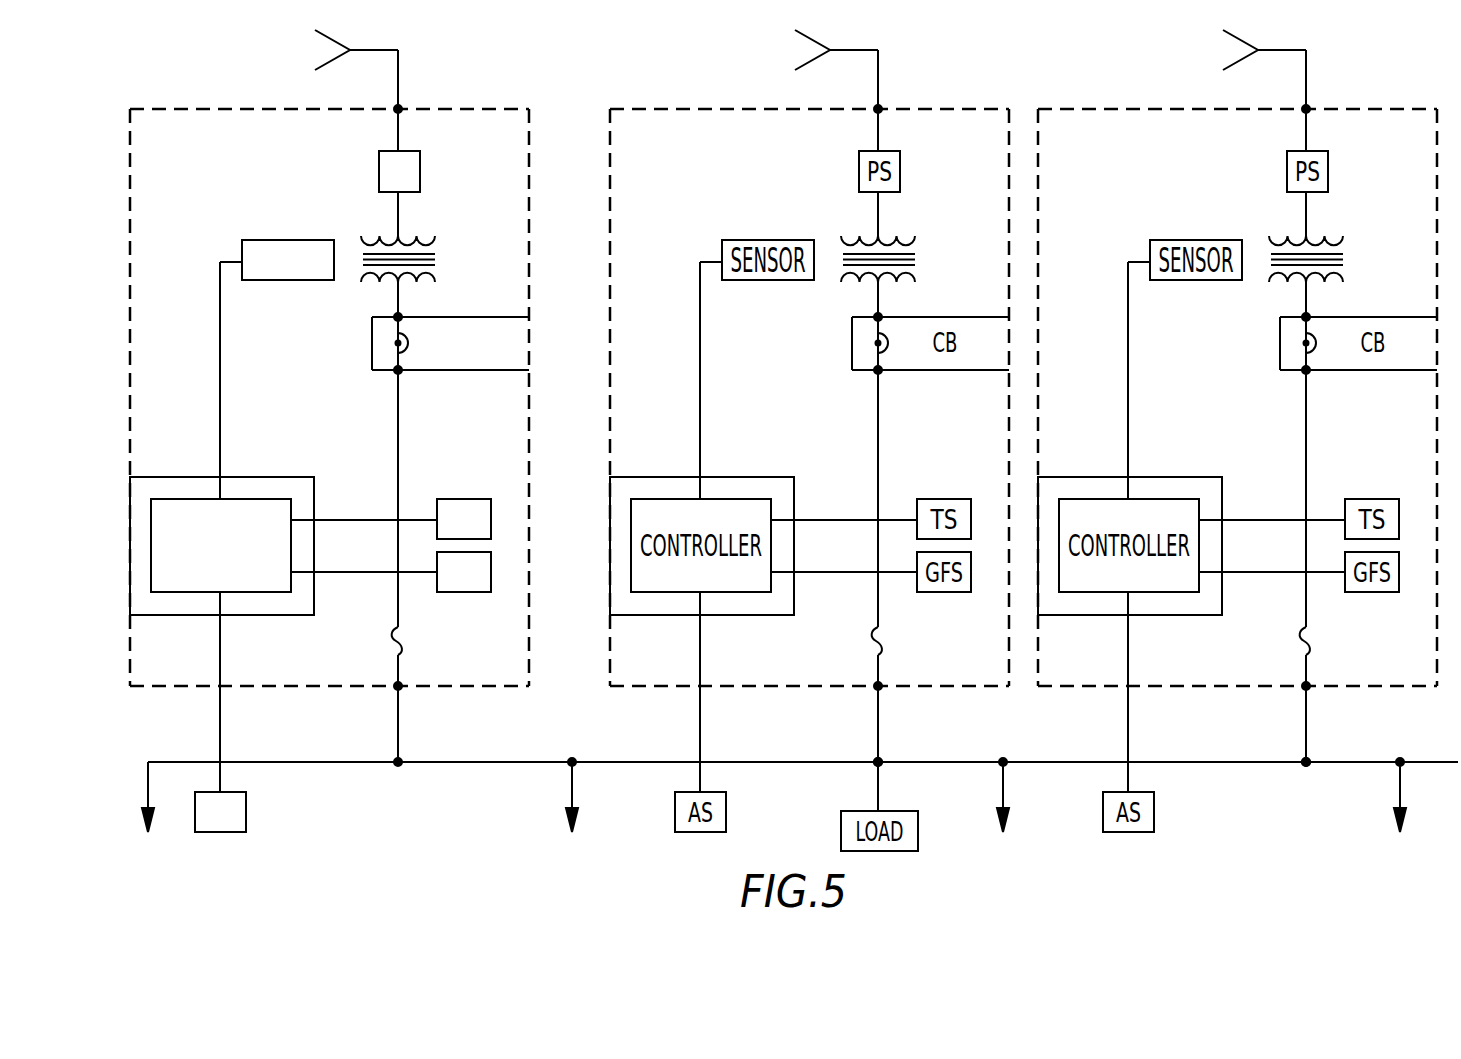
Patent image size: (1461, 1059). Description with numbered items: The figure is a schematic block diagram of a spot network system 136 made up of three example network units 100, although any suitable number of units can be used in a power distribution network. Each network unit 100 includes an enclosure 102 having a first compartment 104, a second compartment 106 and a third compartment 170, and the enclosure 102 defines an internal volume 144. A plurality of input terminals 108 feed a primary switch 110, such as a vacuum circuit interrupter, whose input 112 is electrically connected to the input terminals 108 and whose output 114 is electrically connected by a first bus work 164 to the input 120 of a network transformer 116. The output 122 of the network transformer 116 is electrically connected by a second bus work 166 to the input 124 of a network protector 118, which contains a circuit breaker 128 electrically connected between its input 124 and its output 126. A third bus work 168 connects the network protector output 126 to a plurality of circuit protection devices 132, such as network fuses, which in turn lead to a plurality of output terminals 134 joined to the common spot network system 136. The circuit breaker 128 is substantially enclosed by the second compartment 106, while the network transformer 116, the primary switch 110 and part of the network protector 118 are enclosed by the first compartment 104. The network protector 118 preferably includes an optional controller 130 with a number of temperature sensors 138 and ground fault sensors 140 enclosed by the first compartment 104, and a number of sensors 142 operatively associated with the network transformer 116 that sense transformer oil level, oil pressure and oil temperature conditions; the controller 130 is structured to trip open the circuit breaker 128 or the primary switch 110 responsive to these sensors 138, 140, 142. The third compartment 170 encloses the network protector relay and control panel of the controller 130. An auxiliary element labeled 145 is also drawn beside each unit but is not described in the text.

The network unit 100 is at (212, 96).
The enclosure 102 is at (529, 143).
The first compartment 104 is at (435, 546).
The second compartment 106 is at (433, 348).
The input terminals 108 is at (398, 109).
The primary switch 110 is at (420, 157).
The primary switch input 112 is at (397, 149).
The primary switch output 114 is at (397, 195).
The network transformer 116 is at (410, 256).
The network protector 118 is at (350, 350).
The network transformer input 120 is at (402, 238).
The network transformer output 122 is at (399, 283).
The network protector input 124 is at (398, 317).
The network protector output 126 is at (398, 370).
The circuit breaker 128 is at (506, 358).
The controller 130 is at (260, 499).
The circuit protection devices 132 is at (406, 640).
The output terminals 134 is at (398, 686).
The spot network system 136 is at (1366, 811).
The temperature sensors 138 is at (467, 499).
The ground fault sensors 140 is at (470, 592).
The sensors 142 is at (255, 240).
The internal volume 144 is at (283, 665).
The auxiliary switch 145 is at (246, 812).
The first bus work 164 is at (400, 209).
The second bus work 166 is at (400, 305).
The third bus work 168 is at (398, 428).
The third compartment 170 is at (302, 603).